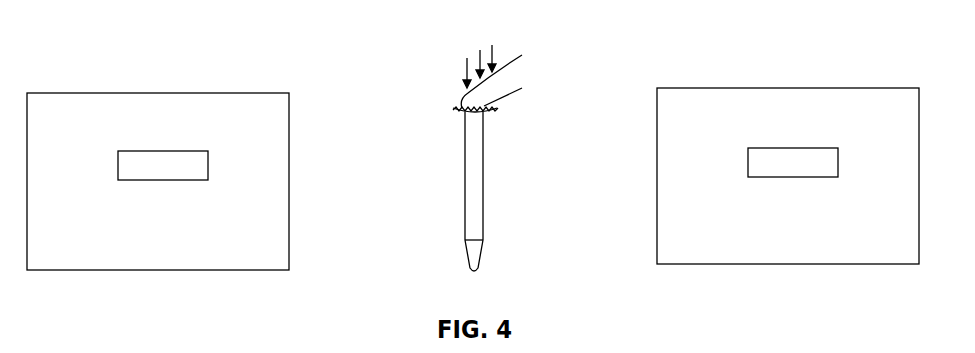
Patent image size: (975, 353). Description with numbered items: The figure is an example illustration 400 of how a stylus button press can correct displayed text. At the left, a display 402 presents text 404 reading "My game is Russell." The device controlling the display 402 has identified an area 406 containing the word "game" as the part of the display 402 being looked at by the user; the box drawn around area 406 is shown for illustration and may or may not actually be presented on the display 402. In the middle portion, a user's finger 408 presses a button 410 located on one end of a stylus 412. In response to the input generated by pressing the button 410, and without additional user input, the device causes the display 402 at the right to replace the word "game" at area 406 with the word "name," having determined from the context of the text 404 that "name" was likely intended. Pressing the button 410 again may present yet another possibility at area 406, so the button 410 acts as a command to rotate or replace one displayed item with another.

The example illustration 400 is at (390, 68).
The display 402 is at (248, 93).
The text 404 is at (92, 153).
The area 406 is at (183, 152).
The user's finger 408 is at (502, 64).
The button 410 is at (488, 110).
The stylus 412 is at (463, 217).